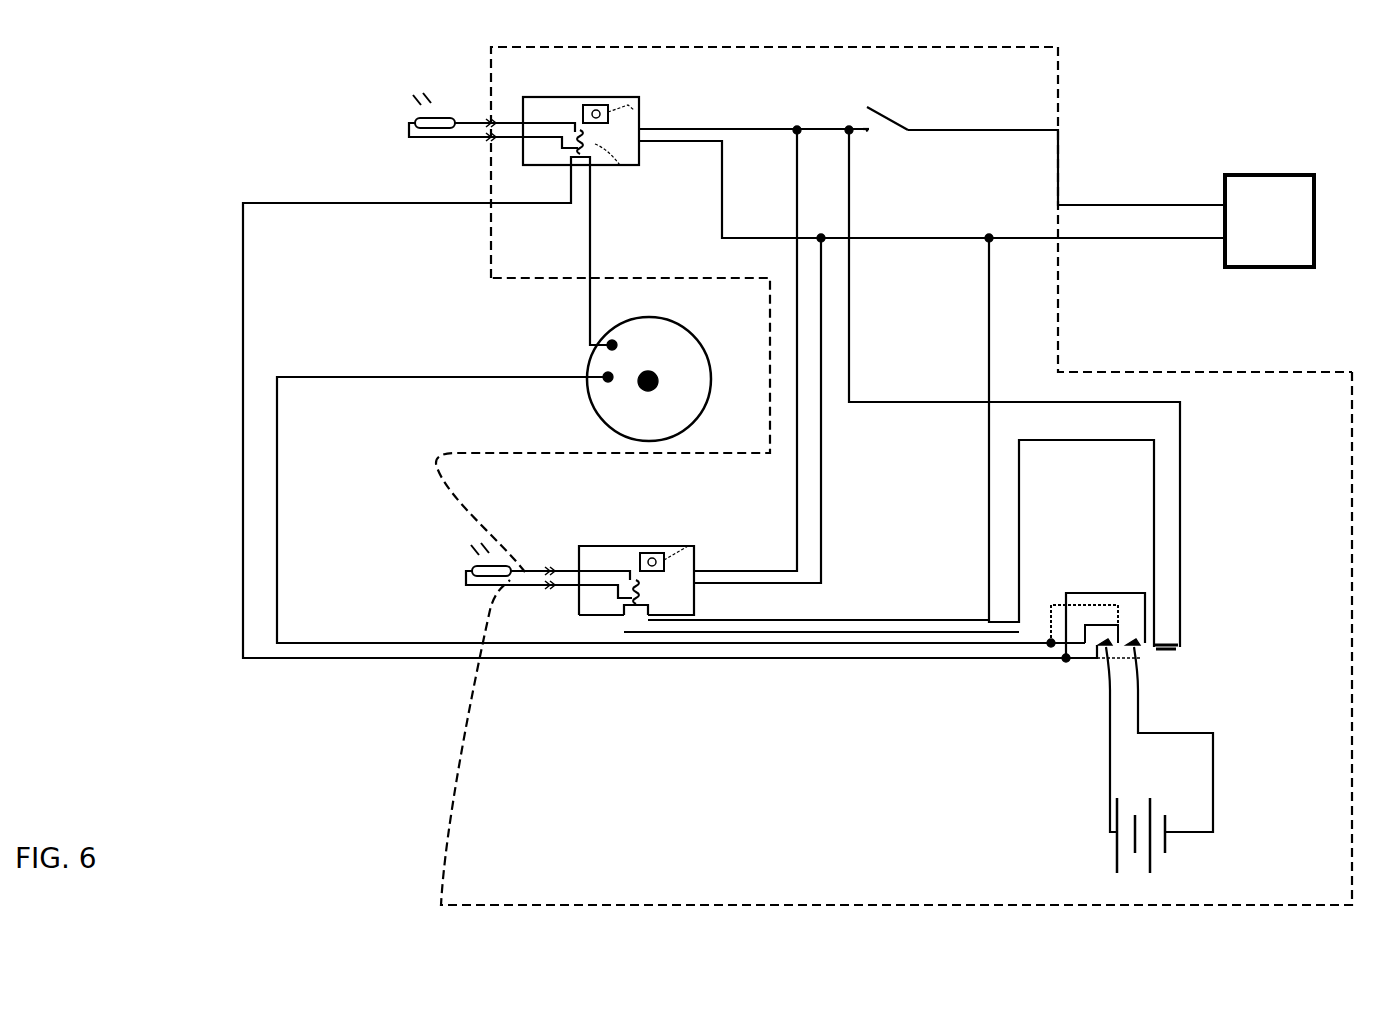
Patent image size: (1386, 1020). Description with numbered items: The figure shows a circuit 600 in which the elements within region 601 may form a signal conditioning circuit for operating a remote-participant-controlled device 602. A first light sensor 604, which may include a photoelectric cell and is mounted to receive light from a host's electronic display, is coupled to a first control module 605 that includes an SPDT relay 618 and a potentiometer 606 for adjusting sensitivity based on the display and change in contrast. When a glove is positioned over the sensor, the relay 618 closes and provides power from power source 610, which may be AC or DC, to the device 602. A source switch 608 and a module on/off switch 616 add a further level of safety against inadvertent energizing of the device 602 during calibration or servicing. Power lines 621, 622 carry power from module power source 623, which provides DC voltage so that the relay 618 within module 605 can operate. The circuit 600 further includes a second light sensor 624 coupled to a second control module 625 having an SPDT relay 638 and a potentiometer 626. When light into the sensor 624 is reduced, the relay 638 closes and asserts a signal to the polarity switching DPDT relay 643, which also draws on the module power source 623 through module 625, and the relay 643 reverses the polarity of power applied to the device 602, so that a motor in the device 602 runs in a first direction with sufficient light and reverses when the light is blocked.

The circuit 600 is at (1232, 95).
The region 601 is at (1225, 356).
The remote-participant-controlled device 602 is at (613, 395).
The first light sensor 604 is at (447, 100).
The first control module 605 is at (557, 100).
The potentiometer 606 is at (642, 111).
The source switch 608 is at (897, 122).
The power source 610 is at (1137, 880).
The module on/off switch 616 is at (1107, 748).
The relay 618 is at (617, 165).
The power line 621 is at (1123, 204).
The power line 622 is at (1193, 241).
The module power source 623 is at (1293, 224).
The second light sensor 624 is at (492, 557).
The second control module 625 is at (602, 546).
The potentiometer 626 is at (700, 565).
The relay 638 is at (612, 585).
The polarity switching DPDT relay 643 is at (1128, 585).